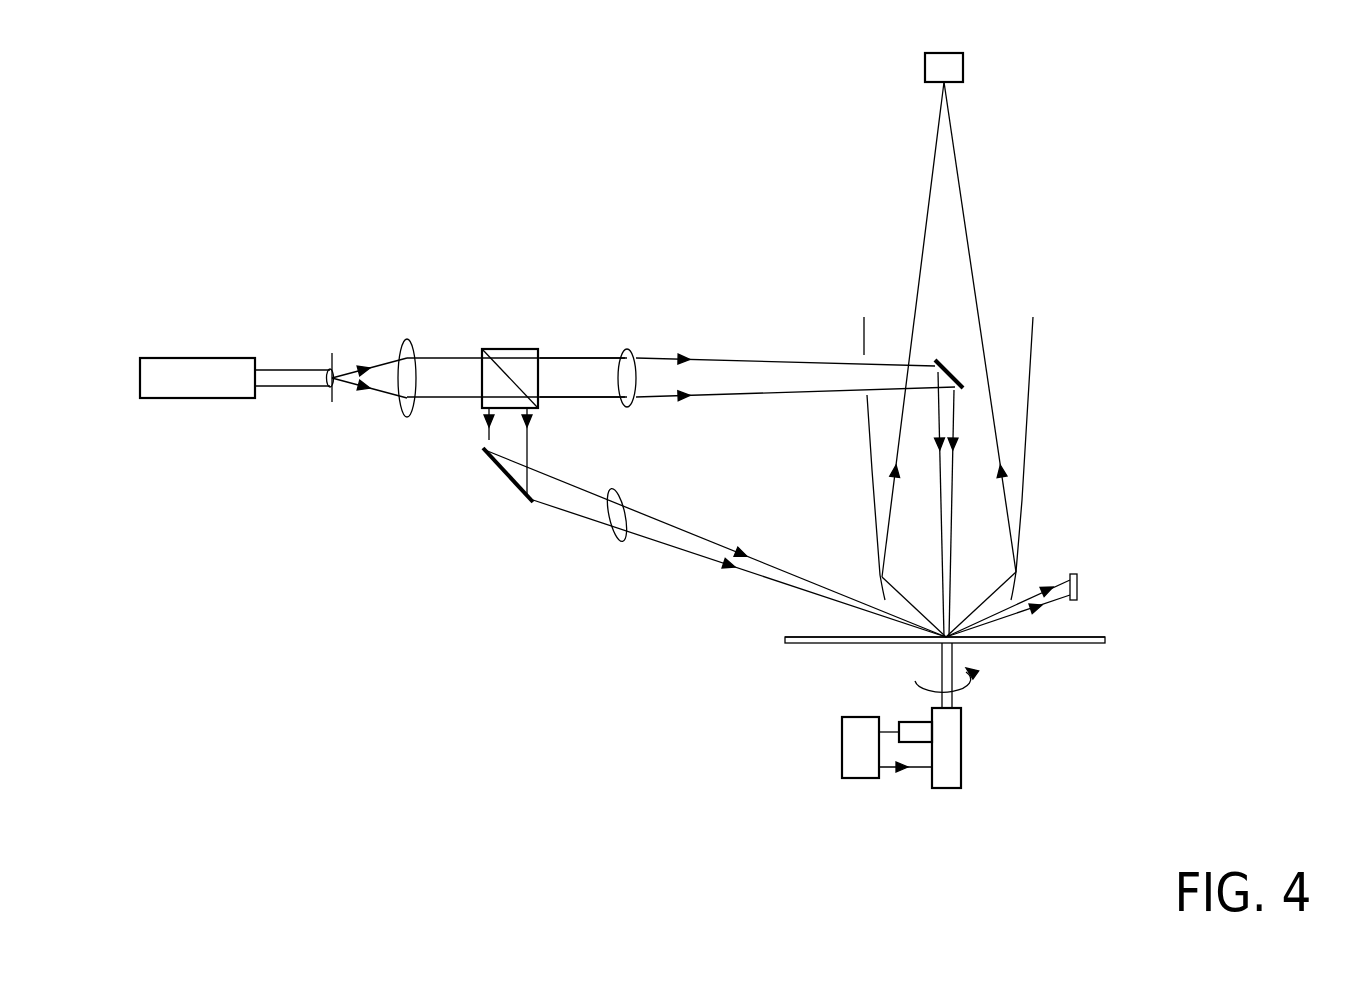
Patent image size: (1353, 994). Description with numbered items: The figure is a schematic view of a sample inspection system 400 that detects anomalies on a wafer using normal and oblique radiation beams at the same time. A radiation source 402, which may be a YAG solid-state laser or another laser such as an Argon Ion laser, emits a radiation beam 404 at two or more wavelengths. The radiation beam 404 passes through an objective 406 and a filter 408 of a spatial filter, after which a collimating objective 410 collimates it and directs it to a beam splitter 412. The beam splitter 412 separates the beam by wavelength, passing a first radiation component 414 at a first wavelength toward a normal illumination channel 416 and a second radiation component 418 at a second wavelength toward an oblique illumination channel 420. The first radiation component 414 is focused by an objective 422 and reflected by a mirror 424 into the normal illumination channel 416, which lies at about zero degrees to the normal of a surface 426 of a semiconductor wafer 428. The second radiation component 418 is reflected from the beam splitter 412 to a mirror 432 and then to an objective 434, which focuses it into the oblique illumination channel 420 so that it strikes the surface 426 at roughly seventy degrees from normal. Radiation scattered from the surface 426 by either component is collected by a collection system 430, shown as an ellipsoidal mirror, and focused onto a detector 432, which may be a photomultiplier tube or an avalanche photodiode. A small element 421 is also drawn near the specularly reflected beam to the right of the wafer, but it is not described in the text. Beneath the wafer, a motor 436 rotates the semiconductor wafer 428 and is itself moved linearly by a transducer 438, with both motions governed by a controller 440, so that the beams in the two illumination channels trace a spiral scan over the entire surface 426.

The sample inspection system 400 is at (593, 173).
The radiation source 402 is at (190, 400).
The radiation beam 404 is at (295, 382).
The objective 406 is at (330, 378).
The filter 408 is at (342, 395).
The collimating objective 410 is at (417, 345).
The beam splitter 412 is at (500, 350).
The first radiation component 414 is at (577, 372).
The normal illumination channel 416 is at (982, 503).
The second radiation component 418 is at (507, 440).
The oblique illumination channel 420 is at (736, 603).
The specular reflection detector 421 is at (1078, 583).
The objective 422 is at (640, 377).
The mirror 424 is at (950, 370).
The surface 426 is at (1105, 638).
The semiconductor wafer 428 is at (1105, 642).
The collection system 430 is at (866, 443).
The detector 432 is at (963, 67).
The objective 434 is at (630, 500).
The motor 436 is at (961, 735).
The transducer 438 is at (915, 721).
The controller 440 is at (842, 745).